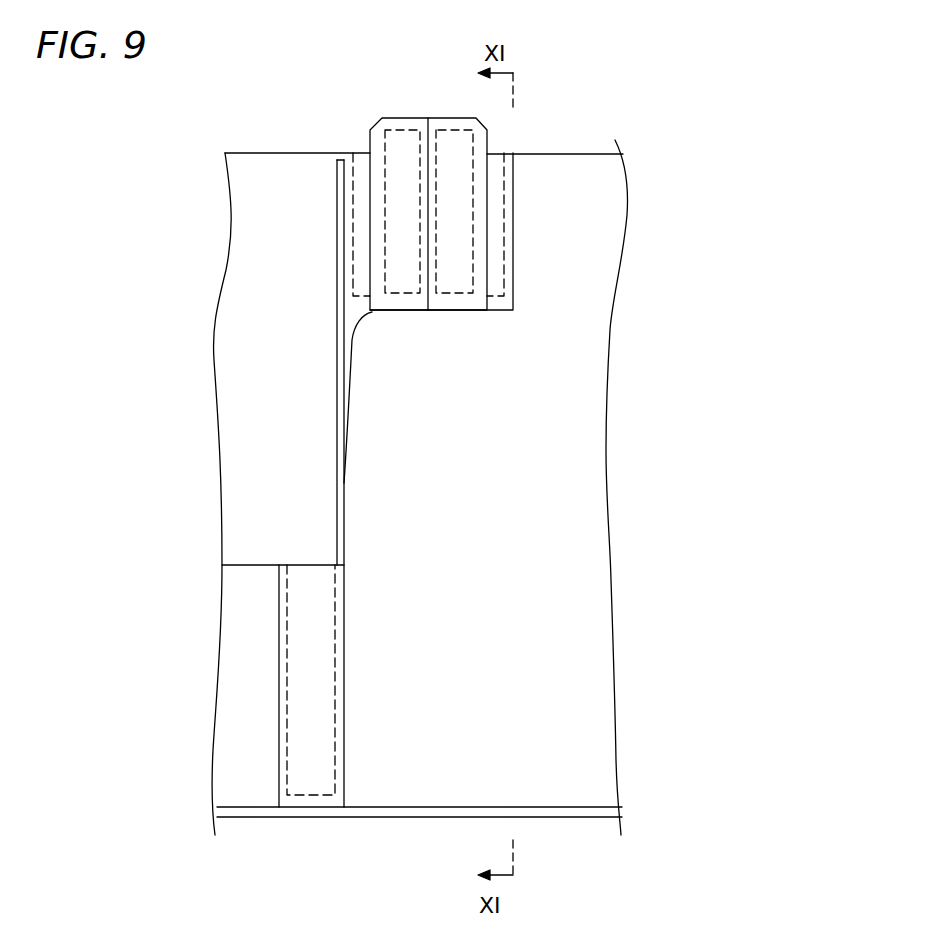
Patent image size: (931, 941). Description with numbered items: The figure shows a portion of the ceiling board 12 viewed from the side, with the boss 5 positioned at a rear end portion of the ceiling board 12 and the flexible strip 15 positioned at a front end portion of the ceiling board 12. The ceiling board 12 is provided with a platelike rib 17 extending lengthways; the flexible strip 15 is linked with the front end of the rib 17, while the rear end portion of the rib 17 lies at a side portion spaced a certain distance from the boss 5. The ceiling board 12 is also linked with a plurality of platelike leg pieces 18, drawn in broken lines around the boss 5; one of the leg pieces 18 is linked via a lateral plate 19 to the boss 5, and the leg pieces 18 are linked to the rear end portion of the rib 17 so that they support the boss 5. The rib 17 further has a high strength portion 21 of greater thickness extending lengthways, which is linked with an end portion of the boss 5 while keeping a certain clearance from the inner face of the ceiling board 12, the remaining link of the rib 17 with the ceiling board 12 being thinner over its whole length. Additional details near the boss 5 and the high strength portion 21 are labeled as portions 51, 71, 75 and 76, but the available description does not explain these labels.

The boss 5 is at (408, 137).
The ceiling board 12 is at (580, 154).
The flexible strip 15 is at (322, 668).
The rib 17 is at (338, 448).
The leg pieces 18 is at (354, 177).
The lateral plate 19 is at (360, 233).
The high strength portion 21 is at (350, 415).
The connector bottom portion 51 is at (415, 312).
The bent portion 71 is at (367, 345).
The curved portion 75 is at (363, 323).
The tapered end 76 is at (348, 455).